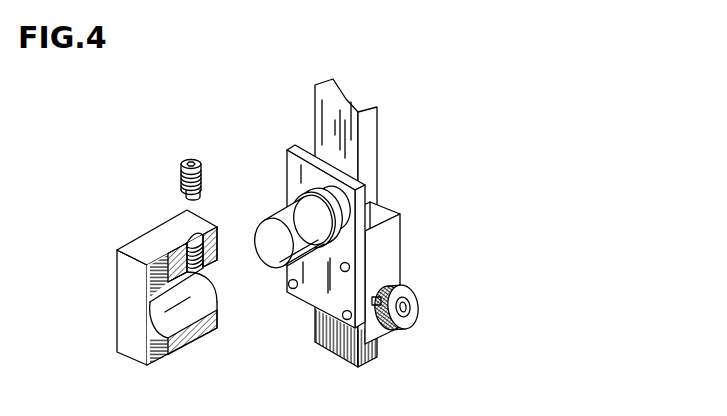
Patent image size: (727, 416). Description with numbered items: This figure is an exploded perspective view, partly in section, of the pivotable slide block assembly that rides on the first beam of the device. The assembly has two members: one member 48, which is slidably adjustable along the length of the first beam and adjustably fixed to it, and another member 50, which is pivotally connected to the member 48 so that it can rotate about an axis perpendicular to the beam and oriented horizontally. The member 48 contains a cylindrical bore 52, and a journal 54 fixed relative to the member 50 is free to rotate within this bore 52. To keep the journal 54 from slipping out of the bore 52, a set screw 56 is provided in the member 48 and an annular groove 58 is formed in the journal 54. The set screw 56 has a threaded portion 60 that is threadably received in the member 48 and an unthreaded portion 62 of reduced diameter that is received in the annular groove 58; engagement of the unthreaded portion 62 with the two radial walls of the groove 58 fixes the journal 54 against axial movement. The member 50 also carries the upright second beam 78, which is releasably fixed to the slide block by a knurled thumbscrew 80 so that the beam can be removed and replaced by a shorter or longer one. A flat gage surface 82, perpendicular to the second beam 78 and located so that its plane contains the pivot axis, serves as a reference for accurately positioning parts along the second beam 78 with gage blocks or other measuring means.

The member 48 is at (175, 239).
The member 50 is at (287, 148).
The cylindrical bore 52 is at (205, 297).
The journal 54 is at (270, 262).
The set screw 56 is at (197, 164).
The annular groove 58 is at (305, 203).
The threaded portion 60 is at (194, 174).
The unthreaded portion 62 is at (203, 192).
The second beam 78 is at (377, 167).
The thumbscrew 80 is at (418, 307).
The gage surface 82 is at (380, 210).